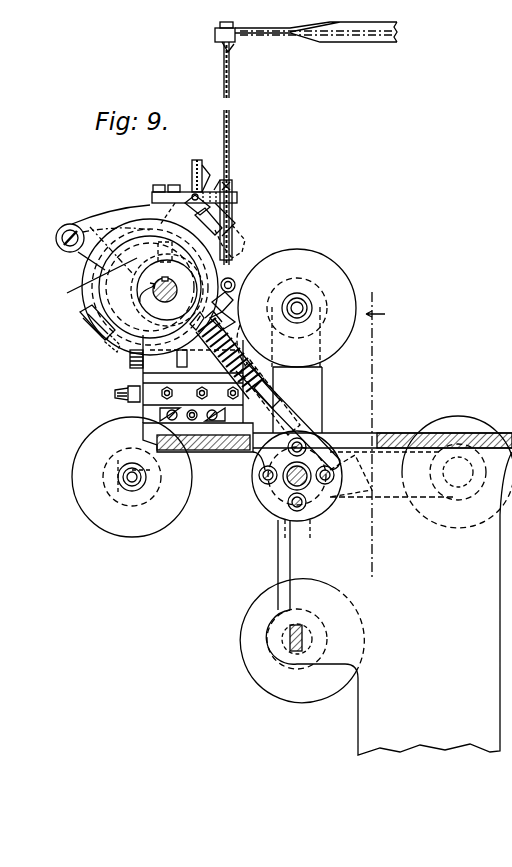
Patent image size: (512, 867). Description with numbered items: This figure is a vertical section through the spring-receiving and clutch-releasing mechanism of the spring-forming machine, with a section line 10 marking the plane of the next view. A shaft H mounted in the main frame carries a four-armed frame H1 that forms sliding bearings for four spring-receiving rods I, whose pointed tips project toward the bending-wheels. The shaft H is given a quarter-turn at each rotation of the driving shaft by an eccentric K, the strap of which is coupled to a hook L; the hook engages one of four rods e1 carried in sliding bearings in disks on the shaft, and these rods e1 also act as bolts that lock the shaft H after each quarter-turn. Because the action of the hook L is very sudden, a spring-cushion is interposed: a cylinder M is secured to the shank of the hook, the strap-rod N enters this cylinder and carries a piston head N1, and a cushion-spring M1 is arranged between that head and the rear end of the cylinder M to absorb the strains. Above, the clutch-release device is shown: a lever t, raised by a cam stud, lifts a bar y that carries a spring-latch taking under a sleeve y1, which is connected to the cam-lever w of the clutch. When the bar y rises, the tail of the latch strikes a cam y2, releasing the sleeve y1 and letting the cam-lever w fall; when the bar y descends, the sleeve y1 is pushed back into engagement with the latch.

The lever t is at (345, 38).
The bar y is at (237, 205).
The sleeve y1 is at (243, 245).
The cam y2 is at (192, 168).
The eccentric K is at (125, 228).
The cam-lever w is at (92, 281).
The cylinder M is at (226, 320).
The cushion-spring M1 is at (242, 346).
The strap-rod N is at (212, 360).
The piston or head N1 is at (276, 364).
The spring-receiving rods I is at (300, 297).
The shaft H is at (290, 485).
The four-armed frame H1 is at (318, 390).
The hook L is at (320, 440).
The rods e1 is at (330, 465).
The section line 10 is at (372, 439).